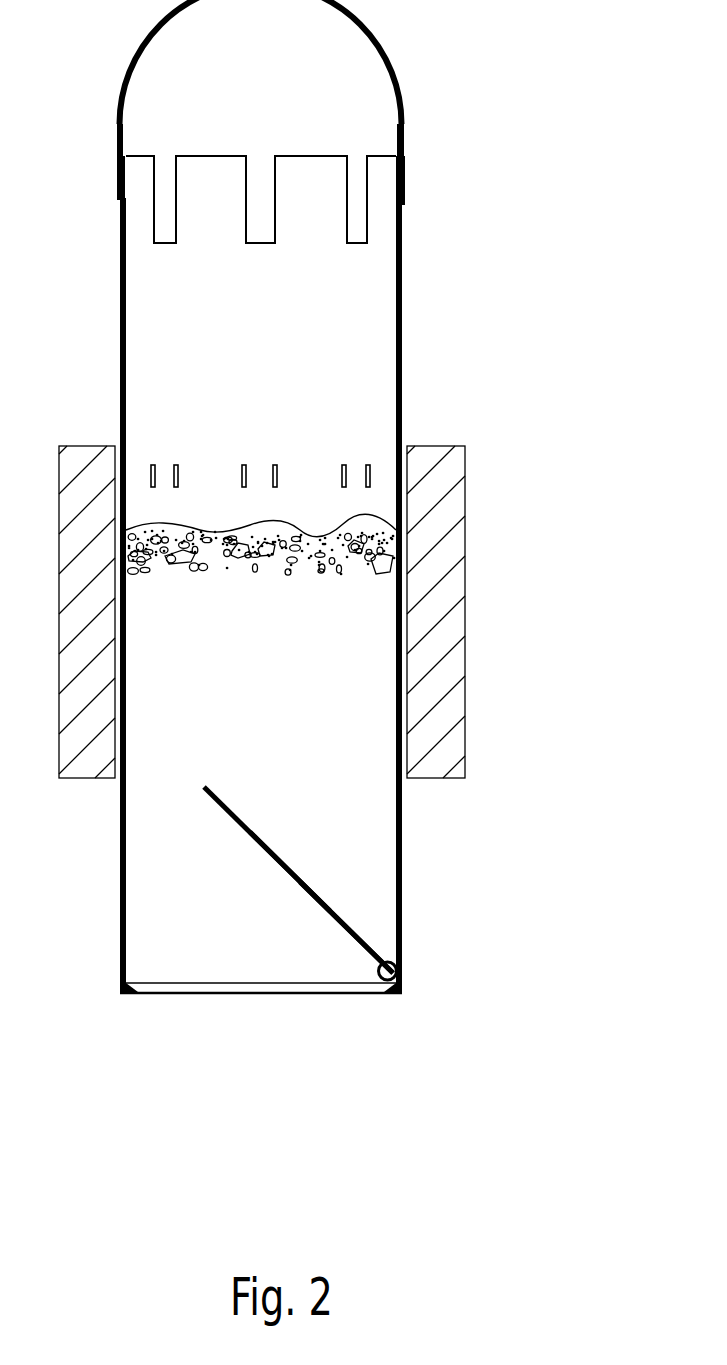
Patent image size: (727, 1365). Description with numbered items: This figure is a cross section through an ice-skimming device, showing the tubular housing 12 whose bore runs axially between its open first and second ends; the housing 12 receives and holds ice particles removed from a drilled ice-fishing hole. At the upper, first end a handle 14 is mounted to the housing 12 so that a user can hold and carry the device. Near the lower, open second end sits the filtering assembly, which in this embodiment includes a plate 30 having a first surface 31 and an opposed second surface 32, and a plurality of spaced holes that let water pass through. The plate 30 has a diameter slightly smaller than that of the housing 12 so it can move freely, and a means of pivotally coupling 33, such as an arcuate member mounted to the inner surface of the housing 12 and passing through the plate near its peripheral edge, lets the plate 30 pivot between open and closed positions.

The housing 12 is at (402, 320).
The handle 14 is at (383, 53).
The plate 30 is at (256, 837).
The first surface 31 is at (327, 905).
The second surface 32 is at (287, 873).
The means of pivotally coupling 33 is at (400, 953).